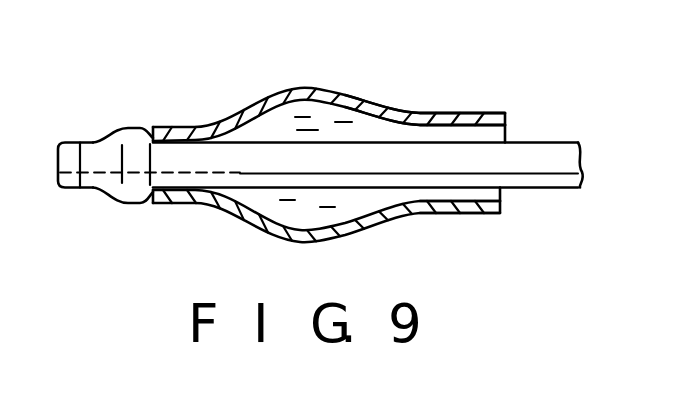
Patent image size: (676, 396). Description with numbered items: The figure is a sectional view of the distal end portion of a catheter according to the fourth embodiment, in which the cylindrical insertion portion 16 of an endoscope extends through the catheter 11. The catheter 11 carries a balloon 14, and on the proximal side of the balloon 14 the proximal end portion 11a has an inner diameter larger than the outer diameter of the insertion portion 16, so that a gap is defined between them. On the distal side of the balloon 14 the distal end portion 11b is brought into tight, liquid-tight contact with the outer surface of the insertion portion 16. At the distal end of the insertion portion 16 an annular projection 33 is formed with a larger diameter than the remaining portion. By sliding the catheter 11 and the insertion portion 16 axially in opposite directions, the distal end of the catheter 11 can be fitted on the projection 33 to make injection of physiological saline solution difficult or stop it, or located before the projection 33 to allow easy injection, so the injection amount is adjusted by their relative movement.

The catheter 11 is at (488, 112).
The proximal end portion 11a is at (421, 112).
The distal end portion 11b is at (158, 205).
The balloon 14 is at (347, 90).
The insertion portion 16 is at (553, 158).
The annular projection 33 is at (153, 132).